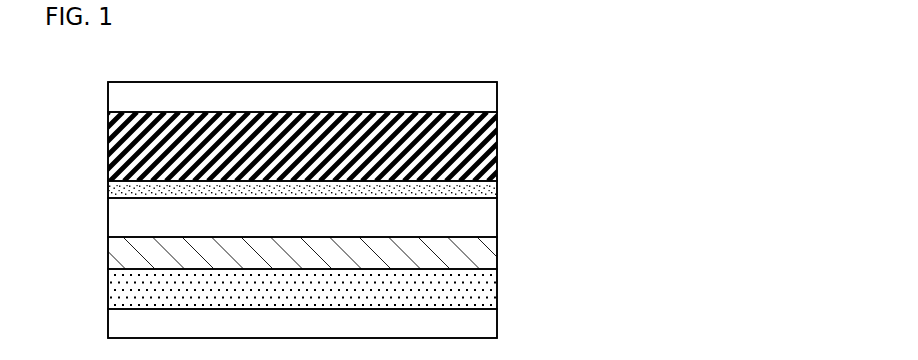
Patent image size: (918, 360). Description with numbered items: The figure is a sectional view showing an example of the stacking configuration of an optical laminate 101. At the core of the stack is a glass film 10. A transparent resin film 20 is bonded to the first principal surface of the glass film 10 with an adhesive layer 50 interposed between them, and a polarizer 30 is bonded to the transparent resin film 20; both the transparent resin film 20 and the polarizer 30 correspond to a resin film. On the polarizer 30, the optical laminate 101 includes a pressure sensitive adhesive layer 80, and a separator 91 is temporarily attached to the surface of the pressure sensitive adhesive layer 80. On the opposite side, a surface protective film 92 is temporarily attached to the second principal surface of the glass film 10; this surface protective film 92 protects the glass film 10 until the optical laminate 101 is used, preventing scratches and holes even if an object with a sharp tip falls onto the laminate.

The optical laminate 101 is at (80, 99).
The surface protective film 92 is at (490, 99).
The glass film 10 is at (490, 147).
The adhesive layer 50 is at (490, 190).
The transparent resin film 20 is at (490, 218).
The polarizer 30 is at (490, 253).
The pressure sensitive adhesive layer 80 is at (490, 288).
The separator 91 is at (490, 325).